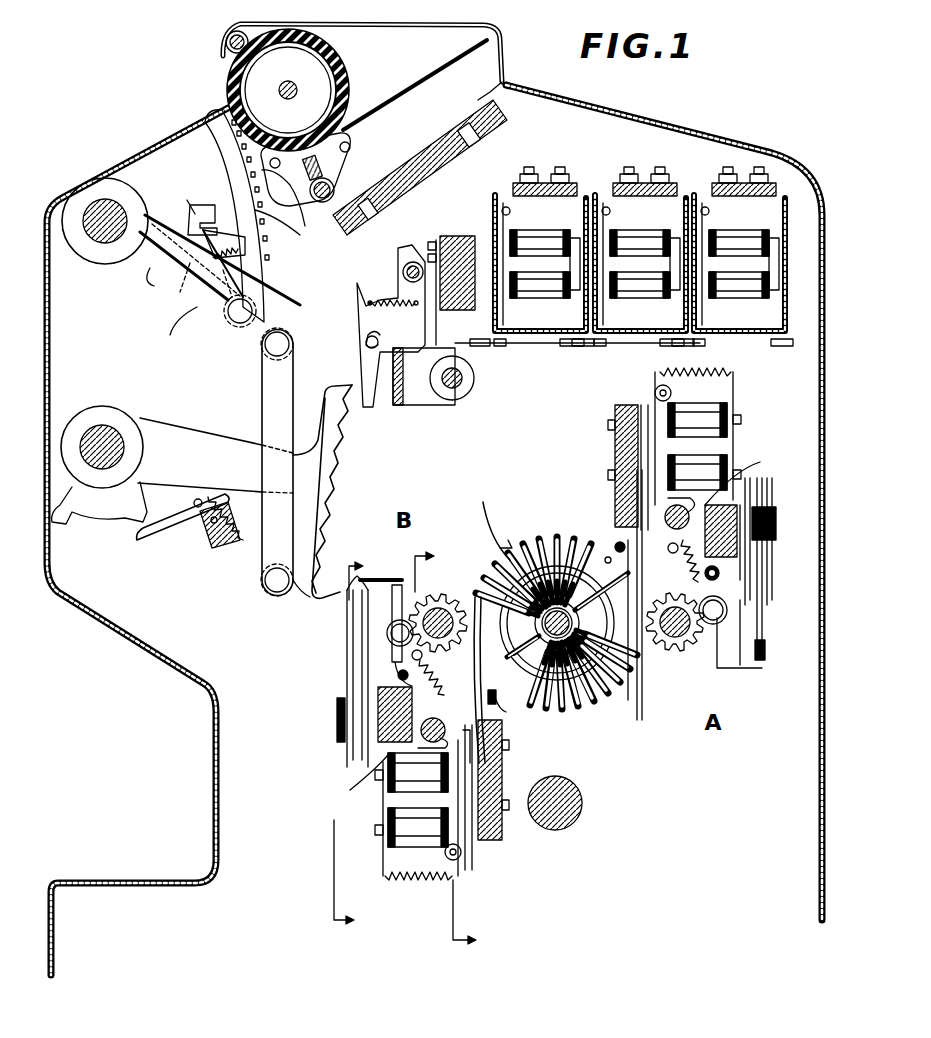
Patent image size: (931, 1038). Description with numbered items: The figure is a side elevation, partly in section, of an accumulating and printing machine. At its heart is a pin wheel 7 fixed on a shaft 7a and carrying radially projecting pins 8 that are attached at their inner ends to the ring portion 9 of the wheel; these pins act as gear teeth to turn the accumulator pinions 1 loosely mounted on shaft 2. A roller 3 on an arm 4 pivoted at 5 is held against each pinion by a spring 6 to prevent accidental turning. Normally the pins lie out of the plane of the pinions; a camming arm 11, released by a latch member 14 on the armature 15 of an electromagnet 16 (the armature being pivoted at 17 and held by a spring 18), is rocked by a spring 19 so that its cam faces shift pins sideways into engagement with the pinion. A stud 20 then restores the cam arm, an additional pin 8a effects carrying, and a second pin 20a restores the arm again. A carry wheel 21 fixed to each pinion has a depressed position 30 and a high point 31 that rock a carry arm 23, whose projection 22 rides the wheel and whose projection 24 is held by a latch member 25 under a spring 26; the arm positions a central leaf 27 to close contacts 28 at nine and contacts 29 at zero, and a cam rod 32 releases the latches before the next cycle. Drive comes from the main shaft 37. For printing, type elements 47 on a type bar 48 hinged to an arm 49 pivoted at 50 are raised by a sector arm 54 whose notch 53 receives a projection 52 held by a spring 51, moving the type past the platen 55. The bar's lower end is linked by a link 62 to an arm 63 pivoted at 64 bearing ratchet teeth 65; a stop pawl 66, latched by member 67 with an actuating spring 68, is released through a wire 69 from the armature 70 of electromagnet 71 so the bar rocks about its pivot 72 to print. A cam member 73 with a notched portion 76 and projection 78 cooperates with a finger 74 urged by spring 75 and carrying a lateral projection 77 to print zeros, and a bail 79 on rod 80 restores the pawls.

The accumulator pinion 1 is at (690, 645).
The shaft 2 is at (672, 650).
The roller 3 is at (720, 600).
The arm 4 is at (700, 590).
The pivot 5 is at (720, 573).
The spring 6 is at (700, 552).
The pin wheel 7 is at (554, 597).
The shaft 7a is at (540, 626).
The pin 8 is at (612, 695).
The additional actuating pin 8a is at (548, 615).
The ring portion 9 is at (598, 628).
The camming arm 11 is at (478, 668).
The latch member 14 is at (616, 486).
The armature 15 is at (640, 446).
The electromagnet 16 is at (712, 410).
The pivot 17 is at (655, 390).
The spring 18 is at (725, 372).
The spring 19 is at (504, 705).
The stud 20 is at (622, 552).
The second pin 20a is at (588, 616).
The carry wheel 21 is at (690, 640).
The projection 22 is at (740, 622).
The carry arm 23 is at (740, 670).
The projection 24 is at (673, 548).
The latch member 25 is at (553, 625).
The spring 26 is at (680, 560).
The central leaf 27 is at (758, 665).
The contacts 28 is at (558, 638).
The contacts 29 is at (340, 592).
The depressed position 30 is at (710, 640).
The high point 31 is at (720, 635).
The cam rod 32 is at (676, 495).
The main shaft 37 is at (575, 808).
The type elements 47 is at (262, 234).
The type bar 48 is at (230, 150).
The arm 49 is at (171, 328).
The shaft 50 is at (108, 246).
The spring 51 is at (225, 260).
The projection 52 is at (232, 222).
The notch 53 is at (177, 199).
The sector arm 54 is at (148, 300).
The platen 55 is at (340, 58).
The link 62 is at (290, 385).
The arm 63 is at (345, 478).
The pivot 64 is at (100, 423).
The ratchet teeth 65 is at (360, 448).
The stop pawl 66 is at (375, 412).
The latch member 67 is at (406, 268).
The actuating spring 68 is at (357, 287).
The wire 69 is at (490, 345).
The armature 70 is at (495, 228).
The electromagnet 71 is at (505, 205).
The pivot 72 is at (236, 325).
The cam member 73 is at (110, 533).
The finger 74 is at (178, 530).
The spring 75 is at (226, 550).
The notched portion 76 is at (73, 525).
The lateral projection 77 is at (172, 507).
The projection 78 is at (62, 528).
The bail 79 is at (405, 385).
The rod 80 is at (455, 388).